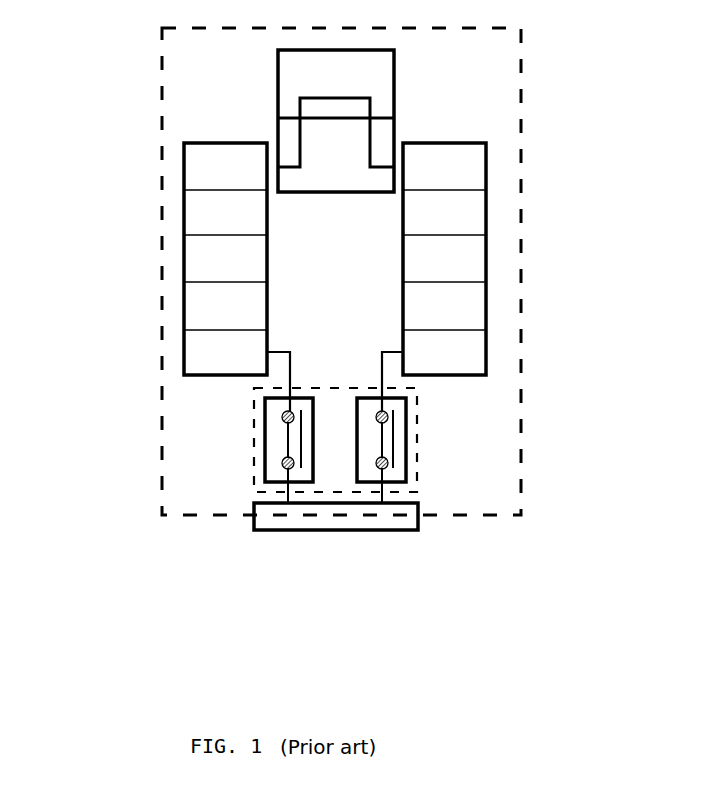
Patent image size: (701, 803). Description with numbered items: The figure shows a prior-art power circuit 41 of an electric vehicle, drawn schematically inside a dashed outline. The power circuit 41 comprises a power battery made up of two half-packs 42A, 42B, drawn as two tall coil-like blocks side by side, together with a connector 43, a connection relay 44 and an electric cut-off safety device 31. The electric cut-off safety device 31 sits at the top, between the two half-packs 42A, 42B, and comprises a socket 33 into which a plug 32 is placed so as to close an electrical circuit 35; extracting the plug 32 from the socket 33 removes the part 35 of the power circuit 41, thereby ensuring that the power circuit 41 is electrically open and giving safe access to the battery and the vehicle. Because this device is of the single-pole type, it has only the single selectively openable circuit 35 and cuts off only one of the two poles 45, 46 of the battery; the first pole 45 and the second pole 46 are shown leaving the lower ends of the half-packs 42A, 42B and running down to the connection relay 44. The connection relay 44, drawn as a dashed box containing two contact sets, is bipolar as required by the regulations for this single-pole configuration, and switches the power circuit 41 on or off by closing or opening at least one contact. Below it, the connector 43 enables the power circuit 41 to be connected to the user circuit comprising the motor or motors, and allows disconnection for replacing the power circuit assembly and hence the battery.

The electric cut-off safety device 31 is at (320, 117).
The plug 32 is at (394, 85).
The socket 33 is at (394, 140).
The electrical circuit 35 is at (300, 108).
The power circuit 41 is at (521, 437).
The first half-pack 42A is at (184, 220).
The second half-pack 42B is at (486, 217).
The connector 43 is at (298, 530).
The connection relay 44 is at (254, 432).
The first pole 45 is at (271, 350).
The second pole 46 is at (402, 352).